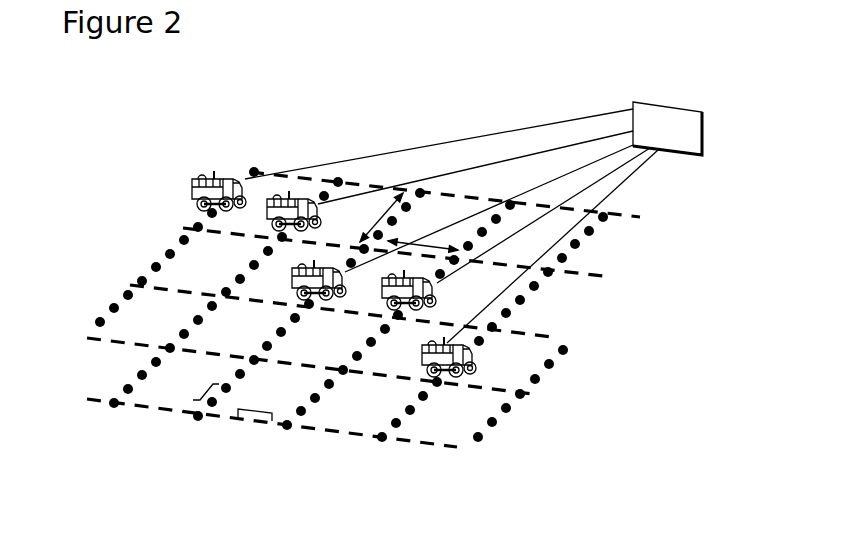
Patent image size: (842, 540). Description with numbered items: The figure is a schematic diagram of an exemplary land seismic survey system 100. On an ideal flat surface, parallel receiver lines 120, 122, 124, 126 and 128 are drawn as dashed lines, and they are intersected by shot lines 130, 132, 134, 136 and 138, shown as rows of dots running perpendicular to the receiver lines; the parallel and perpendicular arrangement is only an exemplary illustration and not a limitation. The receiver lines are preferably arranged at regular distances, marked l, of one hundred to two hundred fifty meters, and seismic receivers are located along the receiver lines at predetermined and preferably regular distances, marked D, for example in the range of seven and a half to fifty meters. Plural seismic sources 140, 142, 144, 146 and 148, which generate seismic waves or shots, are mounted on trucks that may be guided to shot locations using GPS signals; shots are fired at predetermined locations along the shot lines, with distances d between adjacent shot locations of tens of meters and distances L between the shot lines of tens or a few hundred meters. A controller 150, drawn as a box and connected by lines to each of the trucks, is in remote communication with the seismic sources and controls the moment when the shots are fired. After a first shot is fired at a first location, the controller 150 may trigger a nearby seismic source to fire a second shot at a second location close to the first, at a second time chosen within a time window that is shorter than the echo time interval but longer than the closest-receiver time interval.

The land seismic survey system 100 is at (541, 156).
The receiver line 120 is at (446, 451).
The receiver line 122 is at (531, 398).
The receiver line 124 is at (552, 337).
The receiver line 126 is at (610, 278).
The receiver line 128 is at (633, 220).
The shot line 130 is at (97, 321).
The shot line 132 is at (113, 405).
The shot line 134 is at (198, 418).
The shot line 136 is at (288, 428).
The shot line 138 is at (382, 440).
The seismic source 140 is at (232, 178).
The seismic source 142 is at (302, 197).
The seismic source 144 is at (292, 272).
The seismic source 146 is at (437, 296).
The seismic source 148 is at (463, 378).
The controller 150 is at (680, 105).